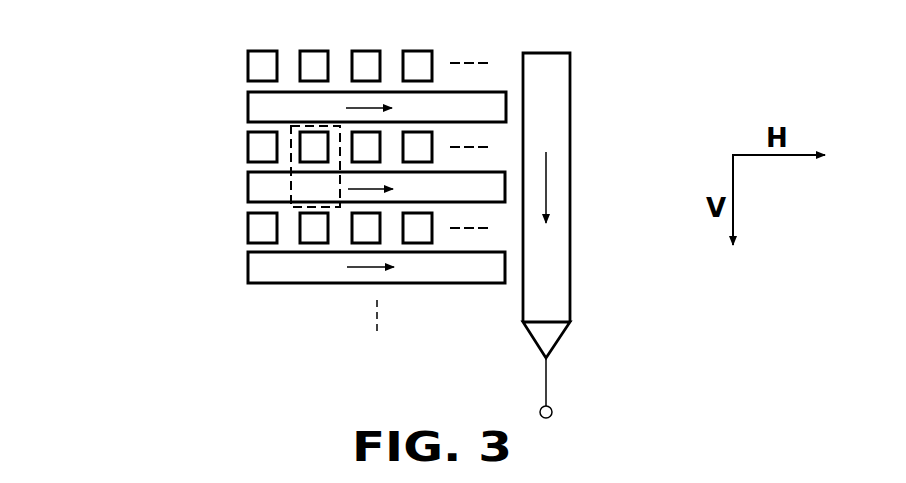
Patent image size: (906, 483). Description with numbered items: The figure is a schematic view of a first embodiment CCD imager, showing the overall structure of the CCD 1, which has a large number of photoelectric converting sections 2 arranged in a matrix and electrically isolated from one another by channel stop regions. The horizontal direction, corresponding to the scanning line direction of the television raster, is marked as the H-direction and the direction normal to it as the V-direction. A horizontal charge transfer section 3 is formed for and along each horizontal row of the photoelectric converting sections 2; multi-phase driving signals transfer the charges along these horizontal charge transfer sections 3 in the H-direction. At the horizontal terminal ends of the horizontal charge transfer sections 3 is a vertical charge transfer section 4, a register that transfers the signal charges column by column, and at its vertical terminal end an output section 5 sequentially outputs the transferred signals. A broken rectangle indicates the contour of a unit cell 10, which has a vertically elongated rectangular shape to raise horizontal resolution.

The CCD 1 is at (220, 280).
The photoelectric converting section 2 is at (362, 67).
The horizontal charge transfer section 3 is at (260, 100).
The vertical charge transfer section 4 is at (555, 133).
The output section 5 is at (550, 336).
The unit cell 10 is at (291, 187).